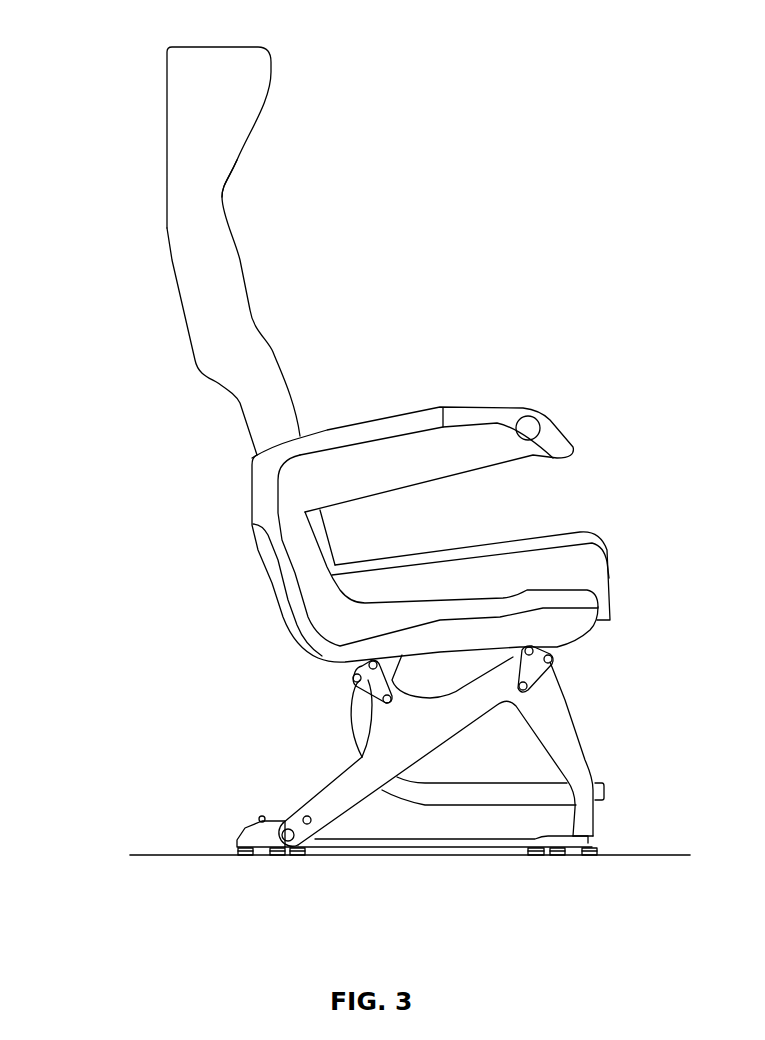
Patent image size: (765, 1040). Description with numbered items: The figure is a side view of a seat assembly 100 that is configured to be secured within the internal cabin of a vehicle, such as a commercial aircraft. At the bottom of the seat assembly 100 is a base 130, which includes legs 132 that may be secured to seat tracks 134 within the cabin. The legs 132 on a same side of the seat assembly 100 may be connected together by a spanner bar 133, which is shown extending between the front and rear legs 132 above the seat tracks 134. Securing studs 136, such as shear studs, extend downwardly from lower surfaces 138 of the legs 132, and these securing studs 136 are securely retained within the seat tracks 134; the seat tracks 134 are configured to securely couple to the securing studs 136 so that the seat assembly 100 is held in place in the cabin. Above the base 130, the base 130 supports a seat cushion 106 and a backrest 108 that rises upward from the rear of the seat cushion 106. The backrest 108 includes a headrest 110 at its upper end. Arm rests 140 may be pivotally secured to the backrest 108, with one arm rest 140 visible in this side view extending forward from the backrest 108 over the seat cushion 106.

The seat assembly 100 is at (150, 52).
The seat cushion 106 is at (597, 533).
The backrest 108 is at (165, 187).
The headrest 110 is at (237, 163).
The arm rests 140 is at (477, 407).
The base 130 is at (347, 768).
The spanner bar 133 is at (518, 783).
The legs 132 is at (237, 838).
The seat tracks 134 is at (317, 857).
The securing studs 136 is at (245, 857).
The lower surfaces 138 is at (262, 818).